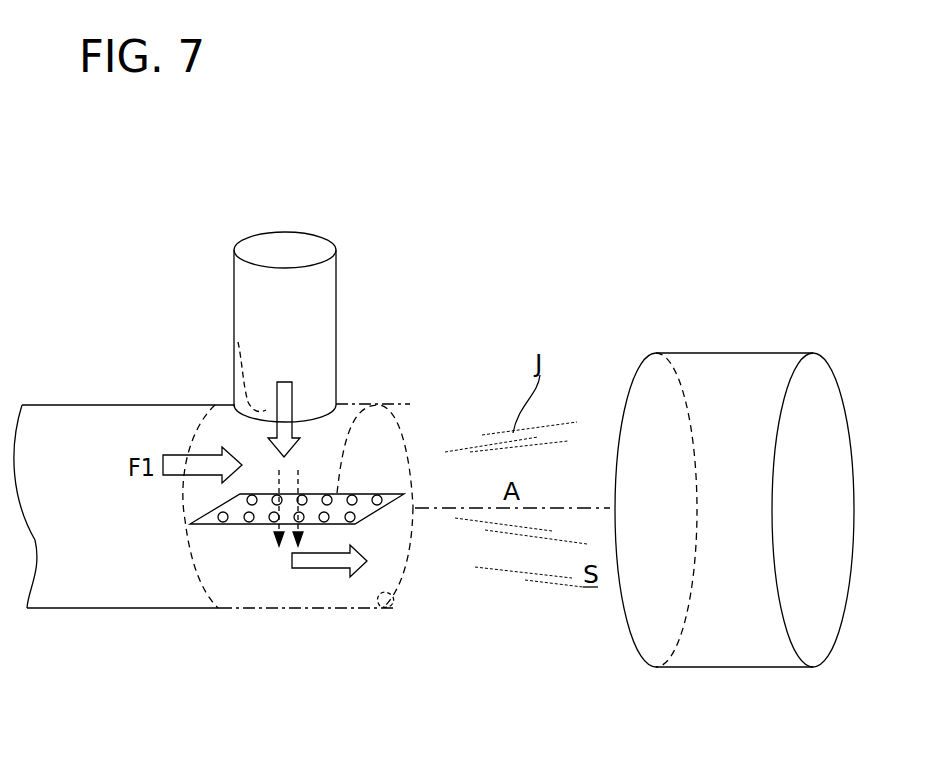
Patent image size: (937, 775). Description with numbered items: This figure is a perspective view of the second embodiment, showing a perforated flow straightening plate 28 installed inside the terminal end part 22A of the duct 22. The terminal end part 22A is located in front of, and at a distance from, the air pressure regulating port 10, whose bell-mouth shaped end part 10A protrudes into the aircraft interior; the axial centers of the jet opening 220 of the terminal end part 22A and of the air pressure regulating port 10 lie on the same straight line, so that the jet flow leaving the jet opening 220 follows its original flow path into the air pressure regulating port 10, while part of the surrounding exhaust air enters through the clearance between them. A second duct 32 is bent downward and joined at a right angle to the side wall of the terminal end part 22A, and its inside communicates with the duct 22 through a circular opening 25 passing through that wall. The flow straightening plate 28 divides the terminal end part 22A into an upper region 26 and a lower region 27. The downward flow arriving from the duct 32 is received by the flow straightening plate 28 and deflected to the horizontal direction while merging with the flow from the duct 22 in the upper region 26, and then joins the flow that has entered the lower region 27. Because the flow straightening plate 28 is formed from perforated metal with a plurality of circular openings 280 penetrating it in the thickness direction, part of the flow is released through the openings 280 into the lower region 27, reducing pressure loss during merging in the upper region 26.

The air pressure regulating port 10 is at (704, 468).
The end part of the air pressure regulating port 10A is at (628, 392).
The duct 22 is at (60, 405).
The terminal end part of the duct 22A is at (358, 402).
The circular opening 25 is at (238, 342).
The upper region 26 is at (333, 472).
The lower region 27 is at (254, 583).
The flow straightening plate 28 is at (266, 461).
The duct 32 is at (337, 286).
The jet opening 220 is at (382, 610).
The openings 280 is at (253, 492).